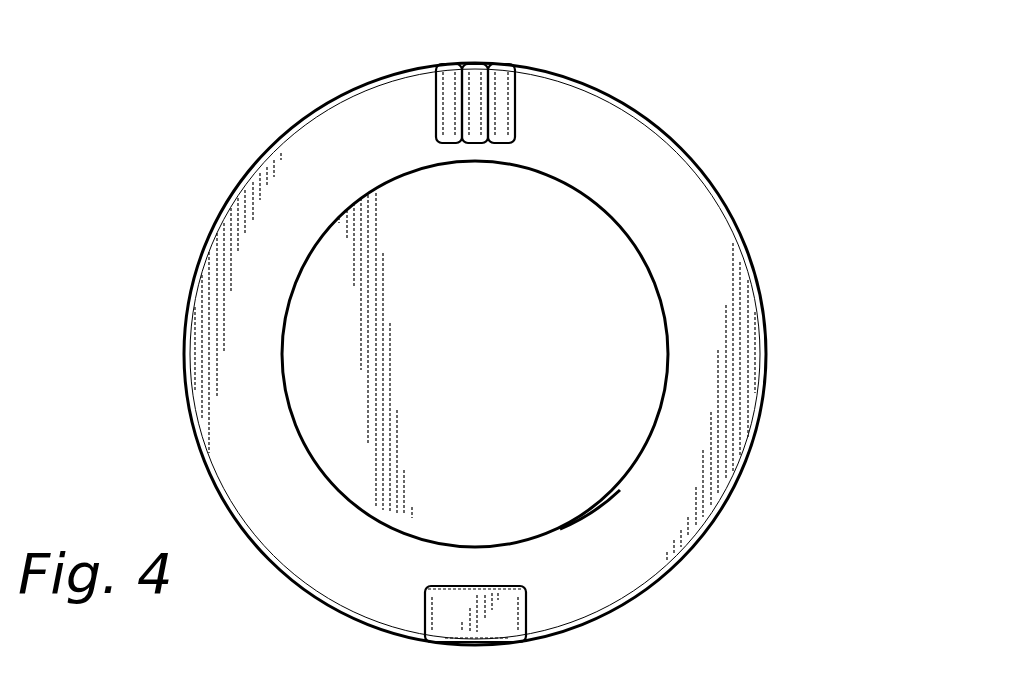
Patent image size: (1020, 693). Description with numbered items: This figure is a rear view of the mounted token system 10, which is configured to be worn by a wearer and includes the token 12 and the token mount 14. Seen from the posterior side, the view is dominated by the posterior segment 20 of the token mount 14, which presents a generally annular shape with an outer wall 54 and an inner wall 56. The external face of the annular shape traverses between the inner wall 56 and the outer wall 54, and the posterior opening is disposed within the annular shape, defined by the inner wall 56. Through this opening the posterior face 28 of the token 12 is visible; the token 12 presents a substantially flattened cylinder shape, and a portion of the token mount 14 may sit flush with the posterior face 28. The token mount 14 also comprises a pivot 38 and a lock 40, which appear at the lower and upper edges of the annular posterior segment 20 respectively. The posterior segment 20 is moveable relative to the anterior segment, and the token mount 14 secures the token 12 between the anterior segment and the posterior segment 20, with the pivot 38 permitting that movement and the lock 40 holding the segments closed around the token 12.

The mounted token system 10 is at (810, 115).
The token 12 is at (610, 272).
The token mount 14 is at (662, 158).
The posterior segment 20 is at (355, 120).
The posterior face 28 is at (641, 373).
The pivot 38 is at (538, 608).
The lock 40 is at (537, 107).
The outer wall 54 is at (728, 502).
The inner wall 56 is at (595, 500).